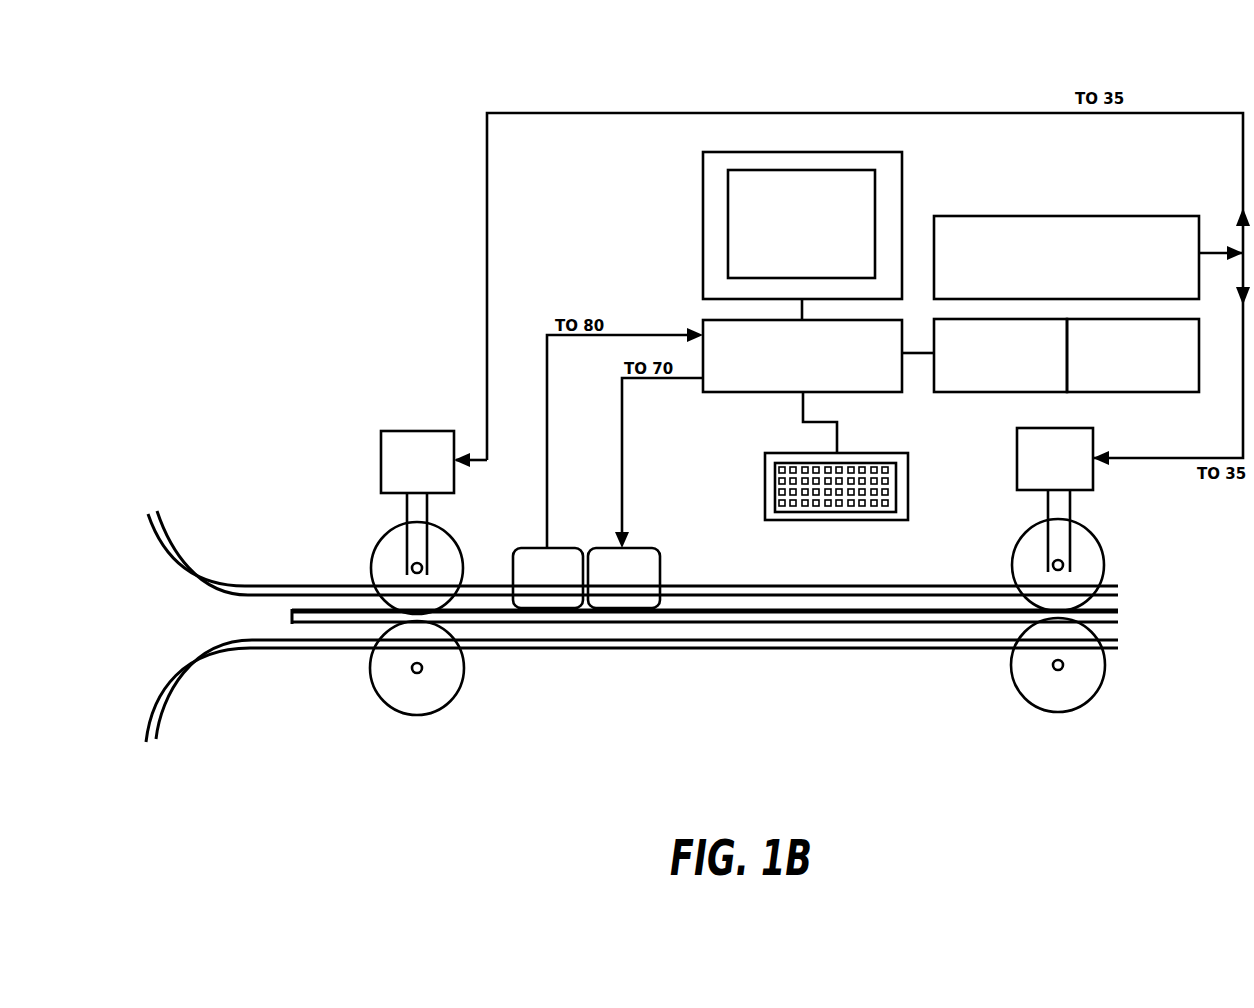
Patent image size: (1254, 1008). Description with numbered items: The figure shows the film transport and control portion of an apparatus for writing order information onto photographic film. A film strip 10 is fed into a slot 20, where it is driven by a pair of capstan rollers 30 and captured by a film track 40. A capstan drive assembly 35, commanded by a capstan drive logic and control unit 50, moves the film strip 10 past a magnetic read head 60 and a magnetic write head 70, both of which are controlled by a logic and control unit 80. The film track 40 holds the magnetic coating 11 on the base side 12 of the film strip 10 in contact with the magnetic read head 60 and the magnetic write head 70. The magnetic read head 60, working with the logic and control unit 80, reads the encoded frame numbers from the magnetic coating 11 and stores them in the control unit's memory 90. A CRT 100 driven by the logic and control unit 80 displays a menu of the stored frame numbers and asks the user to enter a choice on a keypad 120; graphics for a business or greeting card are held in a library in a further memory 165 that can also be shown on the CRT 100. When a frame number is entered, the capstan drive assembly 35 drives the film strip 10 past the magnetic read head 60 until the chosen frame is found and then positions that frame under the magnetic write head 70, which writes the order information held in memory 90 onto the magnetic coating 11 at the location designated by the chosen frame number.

The film strip 10 is at (632, 620).
The magnetic coating 11 is at (907, 601).
The base side 12 is at (919, 625).
The slot 20 is at (176, 566).
The capstan rollers 30 is at (385, 703).
The capstan drive assembly 35 is at (417, 431).
The film track 40 is at (683, 641).
The capstan drive logic and control unit 50 is at (1030, 216).
The magnetic read head 60 is at (535, 548).
The magnetic write head 70 is at (641, 548).
The logic and control unit 80 is at (745, 393).
The memory 90 is at (977, 393).
The CRT 100 is at (703, 232).
The keypad 120 is at (838, 521).
The memory 165 is at (1117, 393).